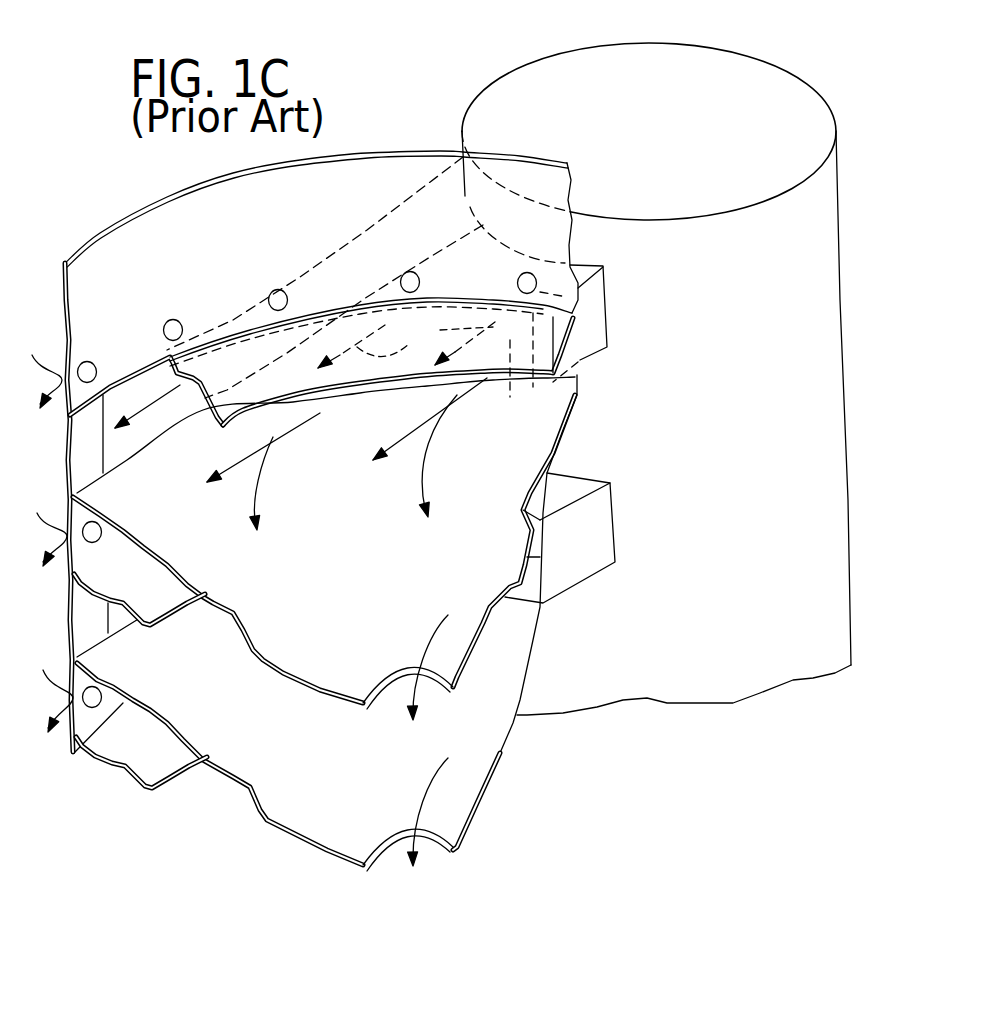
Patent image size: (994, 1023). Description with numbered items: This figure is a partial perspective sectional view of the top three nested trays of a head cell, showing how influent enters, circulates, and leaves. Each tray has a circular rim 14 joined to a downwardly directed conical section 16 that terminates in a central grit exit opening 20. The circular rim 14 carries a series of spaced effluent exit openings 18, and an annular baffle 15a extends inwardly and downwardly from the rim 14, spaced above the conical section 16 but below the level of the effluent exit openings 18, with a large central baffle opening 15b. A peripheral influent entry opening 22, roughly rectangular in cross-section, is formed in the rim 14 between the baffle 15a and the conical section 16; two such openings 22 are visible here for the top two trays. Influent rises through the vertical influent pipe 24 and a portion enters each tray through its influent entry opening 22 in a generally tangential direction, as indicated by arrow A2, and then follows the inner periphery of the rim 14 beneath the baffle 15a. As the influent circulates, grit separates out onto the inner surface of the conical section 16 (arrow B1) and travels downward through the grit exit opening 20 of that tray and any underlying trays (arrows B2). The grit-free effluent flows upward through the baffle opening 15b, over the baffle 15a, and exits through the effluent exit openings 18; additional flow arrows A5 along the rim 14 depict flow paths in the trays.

The circular rim 14 is at (353, 153).
The vertical influent pipe 24 is at (758, 113).
The effluent exit openings 18 is at (96, 362).
The influent entry opening 22 is at (515, 380).
The conical section 16 is at (302, 615).
The grit exit opening 20 is at (380, 672).
The baffle 15a is at (580, 357).
The baffle opening 15b is at (160, 610).
The influent flow arrow A2 is at (160, 402).
The flow arrow A5 is at (47, 526).
The grit separation arrow B1 is at (258, 480).
The grit descent arrows B2 is at (425, 643).